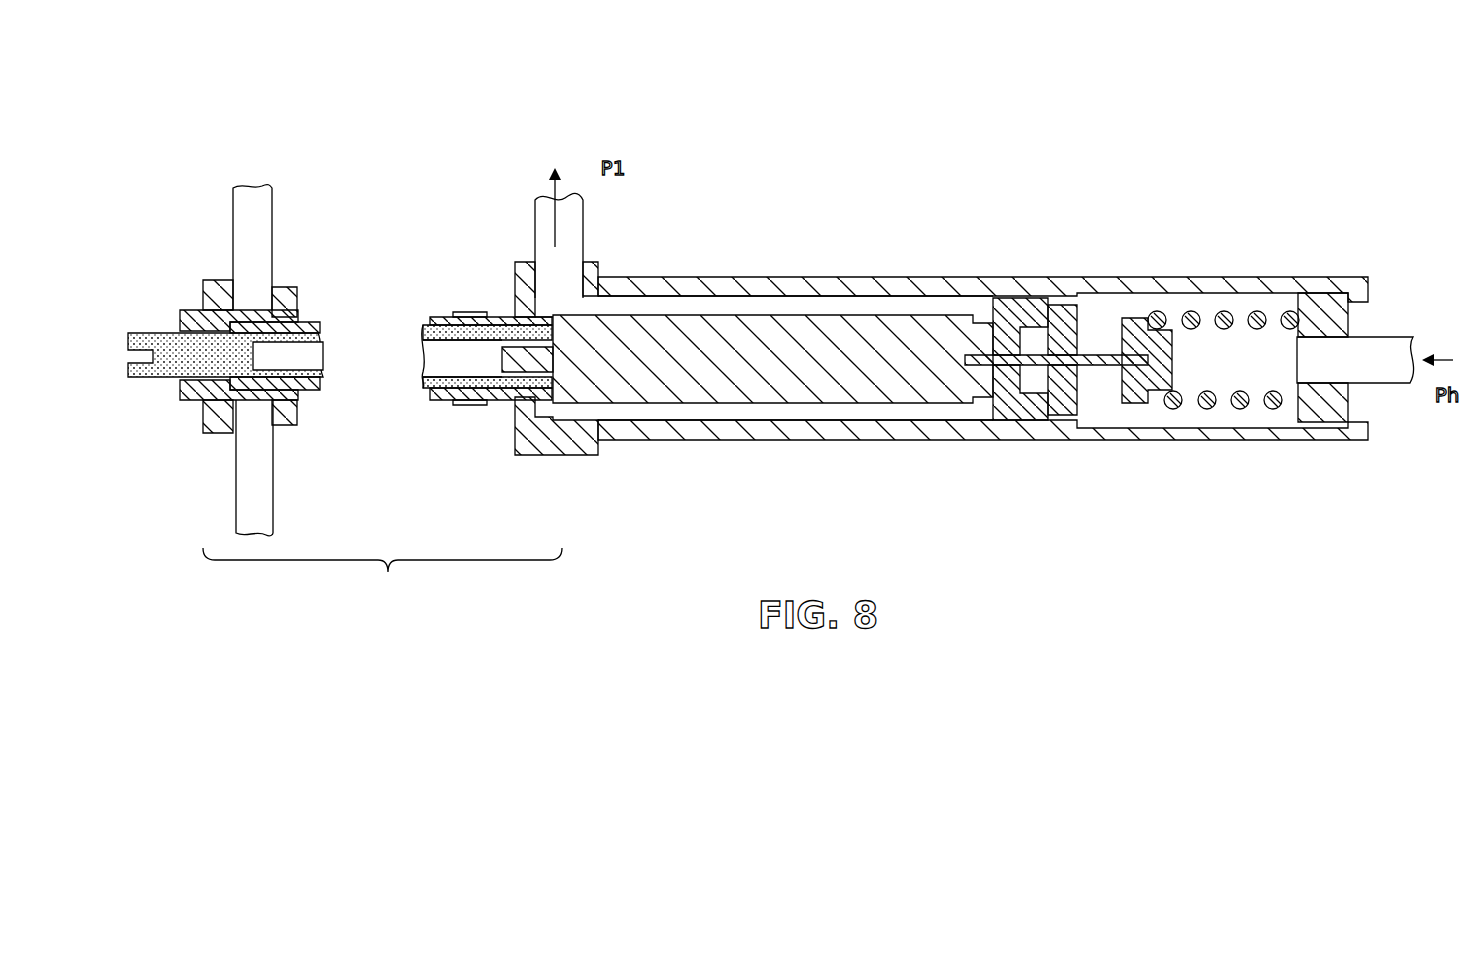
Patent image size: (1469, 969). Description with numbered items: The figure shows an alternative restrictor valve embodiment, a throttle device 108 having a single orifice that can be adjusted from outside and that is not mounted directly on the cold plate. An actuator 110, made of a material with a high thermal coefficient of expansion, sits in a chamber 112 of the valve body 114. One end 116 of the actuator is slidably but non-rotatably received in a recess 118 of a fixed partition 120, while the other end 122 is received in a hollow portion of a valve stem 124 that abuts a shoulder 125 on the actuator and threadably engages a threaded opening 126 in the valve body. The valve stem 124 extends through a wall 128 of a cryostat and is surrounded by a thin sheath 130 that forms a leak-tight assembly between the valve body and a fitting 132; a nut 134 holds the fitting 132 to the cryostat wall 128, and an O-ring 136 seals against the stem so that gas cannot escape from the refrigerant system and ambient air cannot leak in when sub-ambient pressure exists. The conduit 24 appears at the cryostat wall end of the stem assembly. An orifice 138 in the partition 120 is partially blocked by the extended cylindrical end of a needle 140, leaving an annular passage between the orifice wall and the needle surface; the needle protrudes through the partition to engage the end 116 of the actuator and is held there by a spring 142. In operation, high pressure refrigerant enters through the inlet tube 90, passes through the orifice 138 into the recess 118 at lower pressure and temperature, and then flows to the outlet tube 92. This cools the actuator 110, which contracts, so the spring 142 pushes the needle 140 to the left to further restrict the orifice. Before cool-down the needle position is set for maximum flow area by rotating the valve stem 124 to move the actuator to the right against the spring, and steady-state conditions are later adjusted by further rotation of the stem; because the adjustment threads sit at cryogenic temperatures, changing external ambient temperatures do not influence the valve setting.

The conduit 24 is at (130, 333).
The inlet tube 90 is at (1370, 352).
The outlet tube 92 is at (575, 222).
The throttle device 108 is at (983, 301).
The actuator 110 is at (853, 406).
The chamber 112 is at (908, 412).
The valve body 114 is at (781, 444).
The end of the actuator 116 is at (993, 373).
The recess 118 is at (1030, 383).
The fixed partition 120 is at (1067, 395).
The other end of the actuator 122 is at (542, 357).
The valve stem 124 is at (430, 380).
The shoulder 125 is at (517, 318).
The threaded opening 126 is at (490, 400).
The cryostat wall 128 is at (255, 212).
The thin sheath 130 is at (305, 392).
The fitting 132 is at (292, 423).
The nut 134 is at (210, 297).
The O-ring 136 is at (203, 383).
The orifice 138 is at (1058, 345).
The needle 140 is at (1097, 357).
The spring 142 is at (1222, 313).